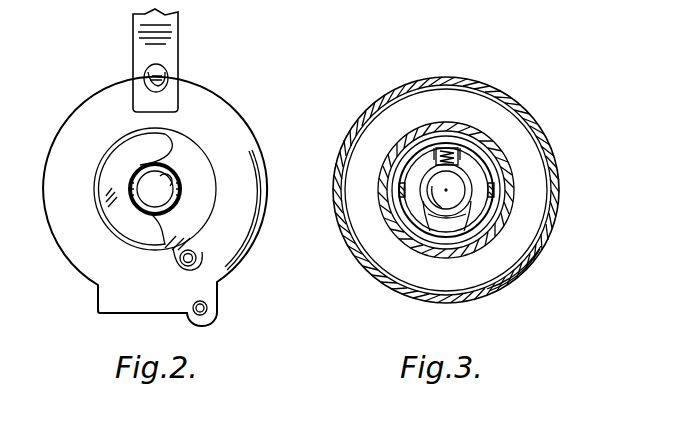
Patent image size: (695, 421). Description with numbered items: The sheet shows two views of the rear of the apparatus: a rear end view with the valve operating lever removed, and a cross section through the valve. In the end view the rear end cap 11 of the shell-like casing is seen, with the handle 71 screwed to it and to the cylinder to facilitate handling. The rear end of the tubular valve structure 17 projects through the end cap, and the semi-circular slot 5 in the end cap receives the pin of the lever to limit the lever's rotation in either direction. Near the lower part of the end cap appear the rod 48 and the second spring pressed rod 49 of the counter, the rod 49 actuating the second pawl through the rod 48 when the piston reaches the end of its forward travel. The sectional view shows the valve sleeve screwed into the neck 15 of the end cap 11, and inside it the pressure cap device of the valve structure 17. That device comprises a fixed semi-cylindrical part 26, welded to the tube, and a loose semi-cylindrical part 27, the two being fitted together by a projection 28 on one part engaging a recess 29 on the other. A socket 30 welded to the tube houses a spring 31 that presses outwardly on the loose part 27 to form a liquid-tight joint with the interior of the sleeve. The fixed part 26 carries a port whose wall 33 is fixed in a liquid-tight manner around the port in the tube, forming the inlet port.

In FIG. 2, the semi-circular slot 5 is at (118, 168).
In FIG. 2, the rear end cap 11 is at (188, 98).
In FIG. 3, the rear end cap 11 is at (510, 108).
In FIG. 3, the neck 15 is at (507, 217).
In FIG. 2, the tubular valve structure 17 is at (165, 185).
In FIG. 3, the tubular valve structure 17 is at (418, 238).
In FIG. 3, the fixed semi-cylindrical part 26 is at (393, 150).
In FIG. 3, the loose semi-cylindrical part 27 is at (413, 227).
In FIG. 3, the projection 28 is at (403, 210).
In FIG. 3, the recess 29 is at (405, 185).
In FIG. 3, the socket 30 is at (462, 160).
In FIG. 3, the spring 31 is at (452, 147).
In FIG. 3, the port wall 33 is at (450, 225).
In FIG. 2, the rod 48 is at (208, 307).
In FIG. 2, the second spring pressed rod 49 is at (195, 252).
In FIG. 2, the handle 71 is at (148, 52).